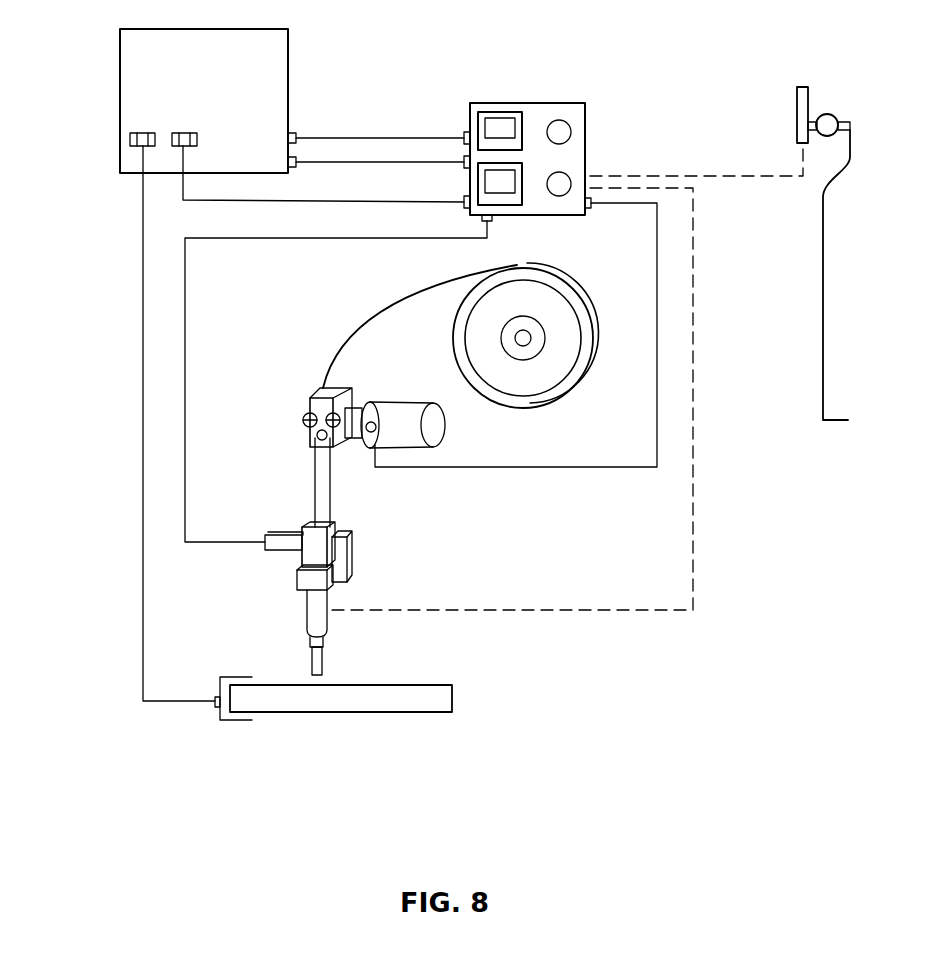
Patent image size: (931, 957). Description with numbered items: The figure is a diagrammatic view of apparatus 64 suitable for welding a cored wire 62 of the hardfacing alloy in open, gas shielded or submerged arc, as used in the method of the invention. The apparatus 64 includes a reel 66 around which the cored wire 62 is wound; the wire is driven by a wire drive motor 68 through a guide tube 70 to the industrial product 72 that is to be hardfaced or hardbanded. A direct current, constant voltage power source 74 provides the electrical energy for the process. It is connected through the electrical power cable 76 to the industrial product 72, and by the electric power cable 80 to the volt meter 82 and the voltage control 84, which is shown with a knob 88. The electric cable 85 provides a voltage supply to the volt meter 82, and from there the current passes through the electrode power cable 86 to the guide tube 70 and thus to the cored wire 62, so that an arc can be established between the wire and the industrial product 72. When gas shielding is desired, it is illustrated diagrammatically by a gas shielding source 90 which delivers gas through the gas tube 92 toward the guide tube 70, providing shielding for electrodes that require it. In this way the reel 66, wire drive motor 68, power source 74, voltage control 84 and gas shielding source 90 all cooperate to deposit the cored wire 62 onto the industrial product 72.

The cored wire 62 is at (373, 310).
The apparatus 64 is at (637, 438).
The reel 66 is at (587, 355).
The wire drive motor 68 is at (430, 427).
The guide tube 70 is at (331, 497).
The industrial product 72 is at (320, 712).
The direct current, constant voltage power source 74 is at (120, 112).
The electrical power cable 76 is at (143, 548).
The electric power cable 80 is at (377, 137).
The volt meter 82 is at (503, 117).
The voltage control 84 is at (572, 132).
The electric cable 85 is at (357, 163).
The electrode power cable 86 is at (185, 407).
The knob 88 is at (562, 195).
The gas shielding source 90 is at (828, 362).
The gas tube 92 is at (693, 176).